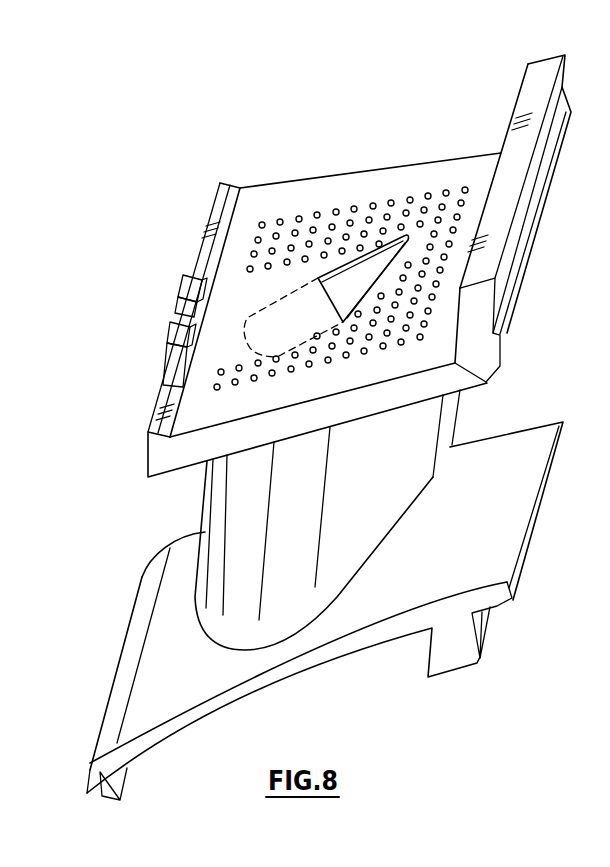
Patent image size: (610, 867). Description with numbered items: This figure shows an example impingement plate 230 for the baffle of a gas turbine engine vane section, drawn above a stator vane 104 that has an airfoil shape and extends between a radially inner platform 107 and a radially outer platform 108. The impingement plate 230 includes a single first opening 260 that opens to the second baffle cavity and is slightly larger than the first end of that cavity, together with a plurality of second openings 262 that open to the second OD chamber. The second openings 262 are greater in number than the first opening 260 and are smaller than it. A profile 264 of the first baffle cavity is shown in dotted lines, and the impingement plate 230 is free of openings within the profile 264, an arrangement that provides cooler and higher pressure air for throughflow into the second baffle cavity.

The impingement plate 230 is at (332, 188).
The second openings 262 is at (428, 193).
The profile of the first baffle cavity 264 is at (260, 312).
The first opening 260 is at (340, 276).
The radially outer platform 108 is at (187, 462).
The stator vane 104 is at (382, 523).
The radially inner platform 107 is at (520, 517).